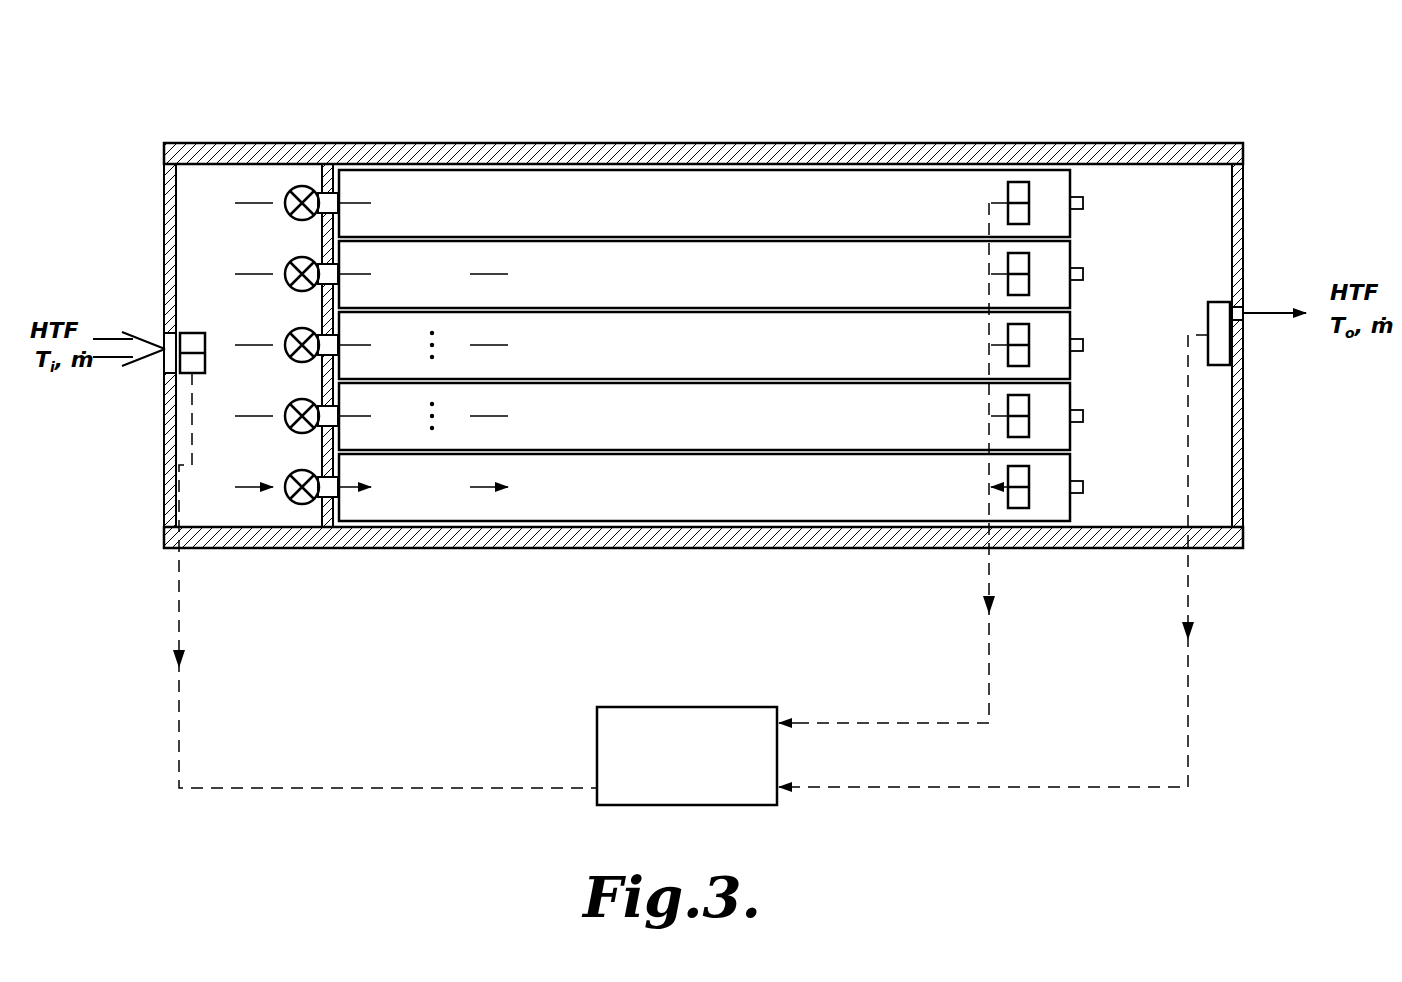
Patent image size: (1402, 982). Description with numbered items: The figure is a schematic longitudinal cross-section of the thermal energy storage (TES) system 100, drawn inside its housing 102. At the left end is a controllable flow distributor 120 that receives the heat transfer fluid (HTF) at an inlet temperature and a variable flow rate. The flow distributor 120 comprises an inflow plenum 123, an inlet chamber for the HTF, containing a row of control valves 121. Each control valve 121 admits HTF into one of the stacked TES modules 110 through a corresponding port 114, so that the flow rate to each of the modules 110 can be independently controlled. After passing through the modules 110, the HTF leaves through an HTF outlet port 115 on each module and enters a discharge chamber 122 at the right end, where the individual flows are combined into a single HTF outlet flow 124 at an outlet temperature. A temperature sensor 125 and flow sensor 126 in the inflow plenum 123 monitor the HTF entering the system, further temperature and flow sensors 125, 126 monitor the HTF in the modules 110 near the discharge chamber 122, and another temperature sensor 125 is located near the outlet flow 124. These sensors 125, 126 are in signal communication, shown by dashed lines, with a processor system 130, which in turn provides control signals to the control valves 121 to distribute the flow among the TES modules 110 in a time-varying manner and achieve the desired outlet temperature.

The TES system 100 is at (1107, 76).
The housing 102 is at (760, 143).
The TES modules 110 is at (782, 219).
The port 114 is at (340, 190).
The HTF outlet port 115 is at (1083, 203).
The flow distributor 120 is at (215, 143).
The control valves 121 is at (302, 186).
The discharge chamber 122 is at (1190, 186).
The inflow plenum 123 is at (182, 190).
The outlet flow 124 is at (1273, 313).
The temperature sensor 125 is at (1230, 363).
The flow sensor 126 is at (1029, 268).
The processor system 130 is at (733, 707).